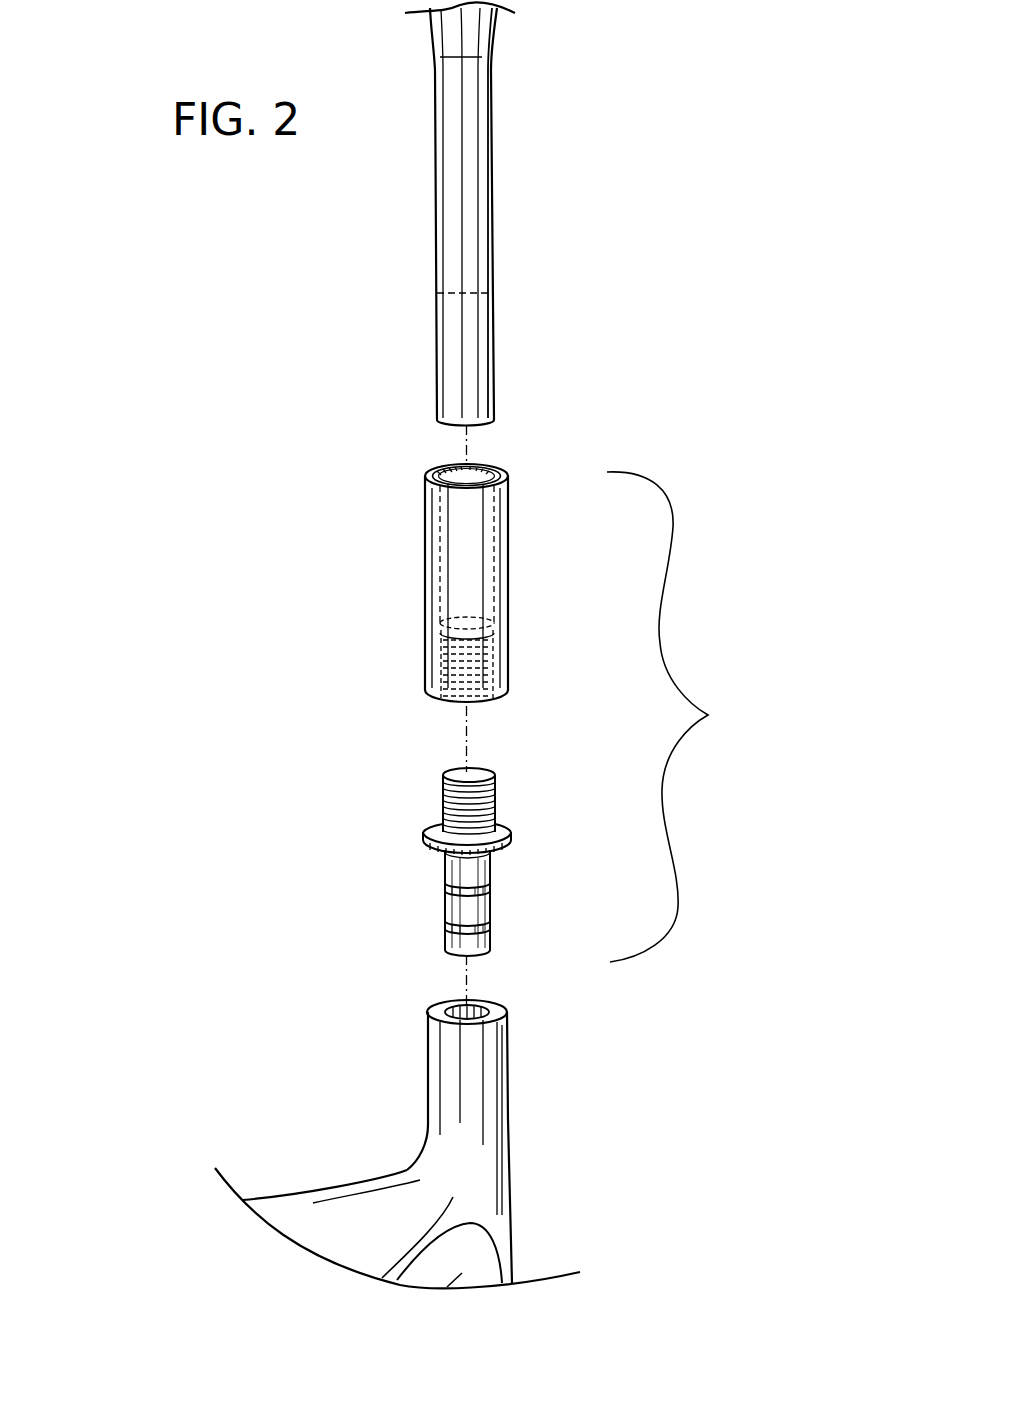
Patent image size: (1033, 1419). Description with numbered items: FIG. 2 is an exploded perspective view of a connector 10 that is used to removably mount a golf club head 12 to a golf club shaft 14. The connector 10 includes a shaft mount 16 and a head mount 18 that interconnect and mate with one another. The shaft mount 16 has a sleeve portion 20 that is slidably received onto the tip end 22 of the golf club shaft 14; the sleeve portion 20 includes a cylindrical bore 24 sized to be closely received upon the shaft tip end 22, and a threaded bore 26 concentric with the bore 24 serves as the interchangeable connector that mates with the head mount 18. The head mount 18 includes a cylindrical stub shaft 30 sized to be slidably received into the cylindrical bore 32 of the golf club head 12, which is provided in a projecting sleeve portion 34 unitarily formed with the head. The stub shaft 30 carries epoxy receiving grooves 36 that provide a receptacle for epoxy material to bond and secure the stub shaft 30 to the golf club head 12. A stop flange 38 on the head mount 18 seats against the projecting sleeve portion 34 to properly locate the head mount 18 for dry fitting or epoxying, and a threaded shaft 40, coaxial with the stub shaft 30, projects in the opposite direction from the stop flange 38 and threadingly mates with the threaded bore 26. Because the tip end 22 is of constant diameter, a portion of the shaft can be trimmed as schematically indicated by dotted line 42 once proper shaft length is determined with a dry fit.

The connector 10 is at (678, 717).
The golf club head 12 is at (418, 1129).
The golf club shaft 14 is at (489, 214).
The shaft mount 16 is at (520, 573).
The head mount 18 is at (445, 862).
The sleeve portion 20 is at (505, 563).
The tip end 22 is at (483, 272).
The cylindrical bore 24 is at (471, 466).
The threaded bore 26 is at (510, 657).
The cylindrical stub shaft 30 is at (447, 905).
The cylindrical bore 32 is at (462, 1005).
The projecting sleeve portion 34 is at (495, 1073).
The epoxy receiving grooves 36 is at (492, 925).
The stop flange 38 is at (511, 838).
The threaded shaft 40 is at (497, 792).
The dotted line 42 is at (445, 293).